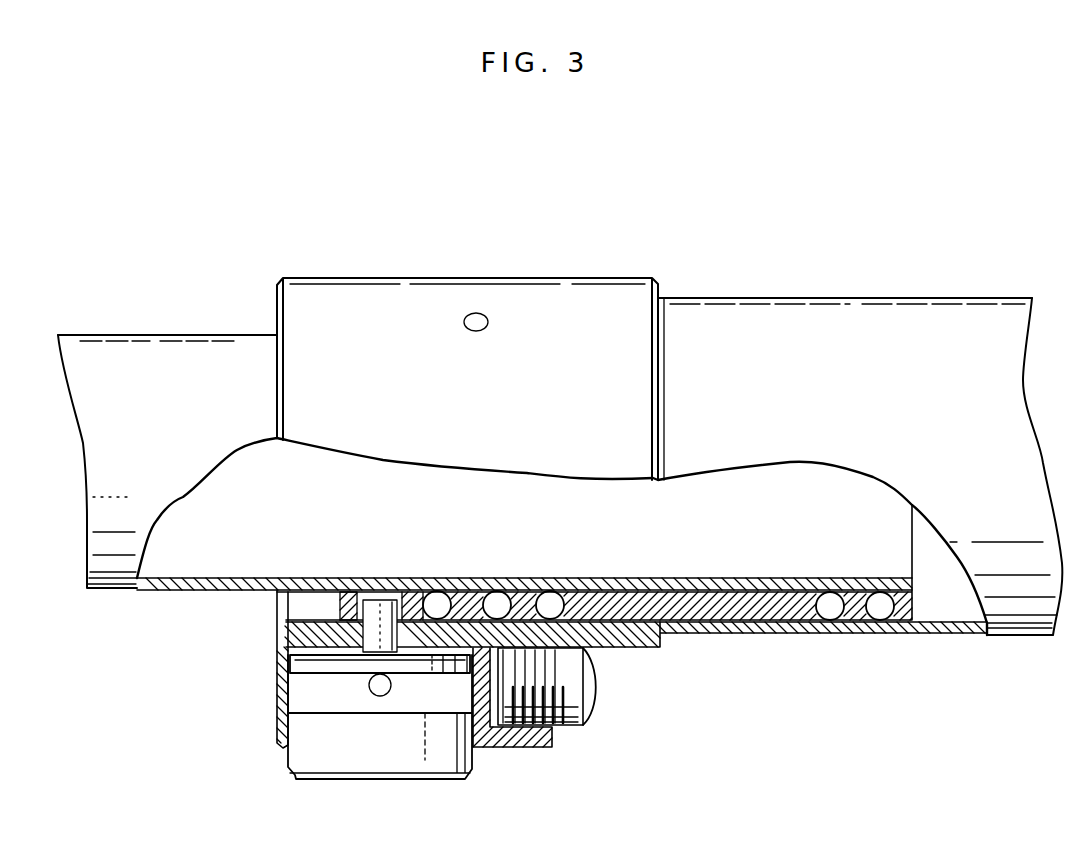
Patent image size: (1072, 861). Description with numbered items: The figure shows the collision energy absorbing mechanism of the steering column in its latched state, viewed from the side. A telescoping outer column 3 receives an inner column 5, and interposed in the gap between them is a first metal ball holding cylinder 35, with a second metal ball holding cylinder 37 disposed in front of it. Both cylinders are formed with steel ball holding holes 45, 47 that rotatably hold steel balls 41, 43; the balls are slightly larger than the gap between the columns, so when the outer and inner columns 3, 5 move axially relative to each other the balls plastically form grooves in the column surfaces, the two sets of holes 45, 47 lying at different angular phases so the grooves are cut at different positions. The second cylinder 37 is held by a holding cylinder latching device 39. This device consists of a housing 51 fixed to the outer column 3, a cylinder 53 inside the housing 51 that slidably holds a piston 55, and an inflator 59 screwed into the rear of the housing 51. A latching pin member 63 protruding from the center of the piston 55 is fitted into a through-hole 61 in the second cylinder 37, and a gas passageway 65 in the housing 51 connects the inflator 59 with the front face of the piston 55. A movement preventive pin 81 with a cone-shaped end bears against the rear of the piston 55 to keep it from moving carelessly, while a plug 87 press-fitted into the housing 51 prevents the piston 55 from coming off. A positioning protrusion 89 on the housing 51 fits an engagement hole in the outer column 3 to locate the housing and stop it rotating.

The outer column 3 is at (935, 300).
The inner column 5 is at (145, 350).
The first metal ball holding cylinder 35 is at (725, 614).
The second metal ball holding cylinder 37 is at (340, 600).
The holding cylinder latching device 39 is at (314, 746).
The steel balls 41 is at (514, 592).
The steel balls 43 is at (442, 592).
The steel ball holding hole 45 is at (490, 591).
The steel ball holding hole 47 is at (427, 590).
The housing 51 is at (328, 276).
The cylinder 53 is at (277, 712).
The piston 55 is at (313, 681).
The inflator 59 is at (592, 702).
The through-hole 61 is at (360, 590).
The latching pin member 63 is at (375, 600).
The gas passageway 65 is at (480, 748).
The movement preventive pin 81 is at (385, 696).
The plug 87 is at (268, 781).
The positioning protrusion 89 is at (478, 313).